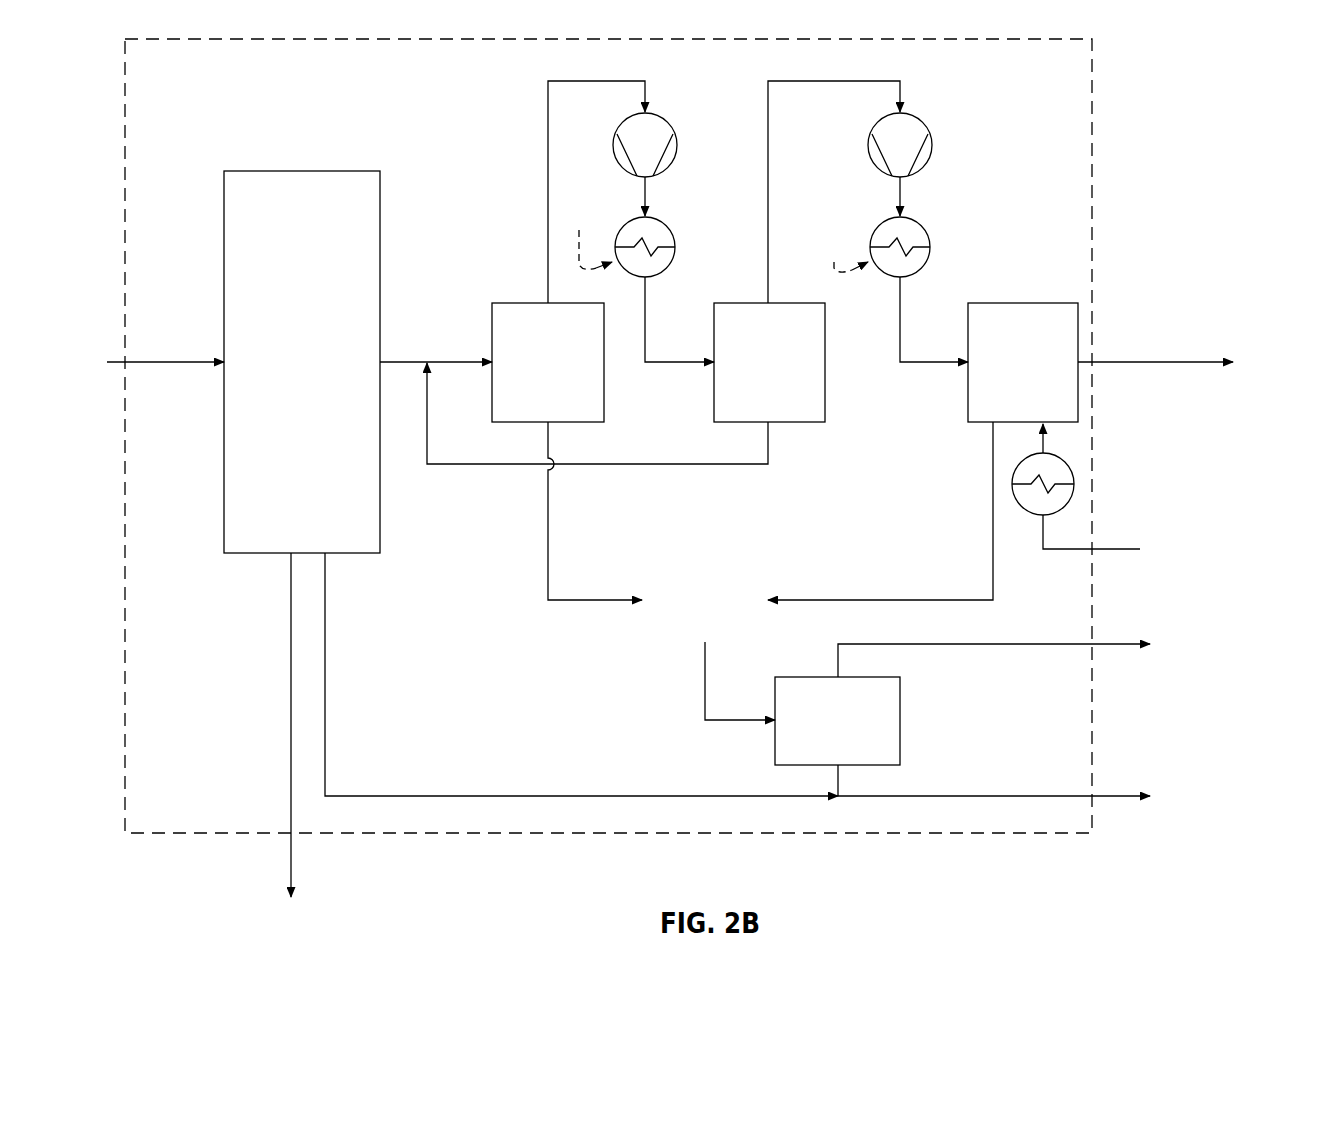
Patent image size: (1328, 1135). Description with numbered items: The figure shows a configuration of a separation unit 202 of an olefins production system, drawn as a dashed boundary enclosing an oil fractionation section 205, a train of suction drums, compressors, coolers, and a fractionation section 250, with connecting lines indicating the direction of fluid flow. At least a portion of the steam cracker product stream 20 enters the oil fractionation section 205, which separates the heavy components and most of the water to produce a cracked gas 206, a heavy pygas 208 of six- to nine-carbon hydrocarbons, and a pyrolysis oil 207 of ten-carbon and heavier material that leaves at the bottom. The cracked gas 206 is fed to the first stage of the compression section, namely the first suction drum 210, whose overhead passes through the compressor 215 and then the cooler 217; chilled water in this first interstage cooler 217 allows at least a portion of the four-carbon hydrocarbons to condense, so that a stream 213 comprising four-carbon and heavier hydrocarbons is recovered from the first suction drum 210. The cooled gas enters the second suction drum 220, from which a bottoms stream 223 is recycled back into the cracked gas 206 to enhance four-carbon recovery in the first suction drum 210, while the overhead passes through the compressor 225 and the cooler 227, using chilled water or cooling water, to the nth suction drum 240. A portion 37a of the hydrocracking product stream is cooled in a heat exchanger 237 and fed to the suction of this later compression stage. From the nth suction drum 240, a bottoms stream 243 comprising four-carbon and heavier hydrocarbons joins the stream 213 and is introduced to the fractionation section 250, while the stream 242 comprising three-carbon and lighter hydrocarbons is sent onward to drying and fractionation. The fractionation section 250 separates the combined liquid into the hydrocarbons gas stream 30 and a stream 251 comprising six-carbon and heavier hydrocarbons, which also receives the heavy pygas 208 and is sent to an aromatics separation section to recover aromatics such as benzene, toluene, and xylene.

The separation unit 202 is at (322, 82).
The oil fractionation section 205 is at (272, 170).
The steam cracker product stream 20 is at (200, 360).
The cracked gas 206 is at (462, 360).
The pyrolysis oil 207 is at (290, 676).
The heavy pygas 208 is at (326, 676).
The first suction drum 210 is at (533, 302).
The stream comprising C4+ hydrocarbons 213 is at (550, 548).
The compressor 215 is at (656, 118).
The cooler 217 is at (657, 222).
The second suction drum 220 is at (760, 302).
The bottoms stream 223 is at (647, 464).
The compressor 225 is at (911, 118).
The cooler 227 is at (912, 222).
The nth suction drum 240 is at (1014, 302).
The stream comprising C3- hydrocarbons 242 is at (1155, 360).
The heat exchanger 237 is at (1070, 468).
The portion of the hydrocracking product stream 37a is at (1125, 549).
The stream from nth suction drum 243 is at (852, 600).
The fractionation section 250 is at (806, 676).
The hydrocarbons gas stream 30 is at (958, 644).
The stream comprising C6+ hydrocarbons 251 is at (958, 796).